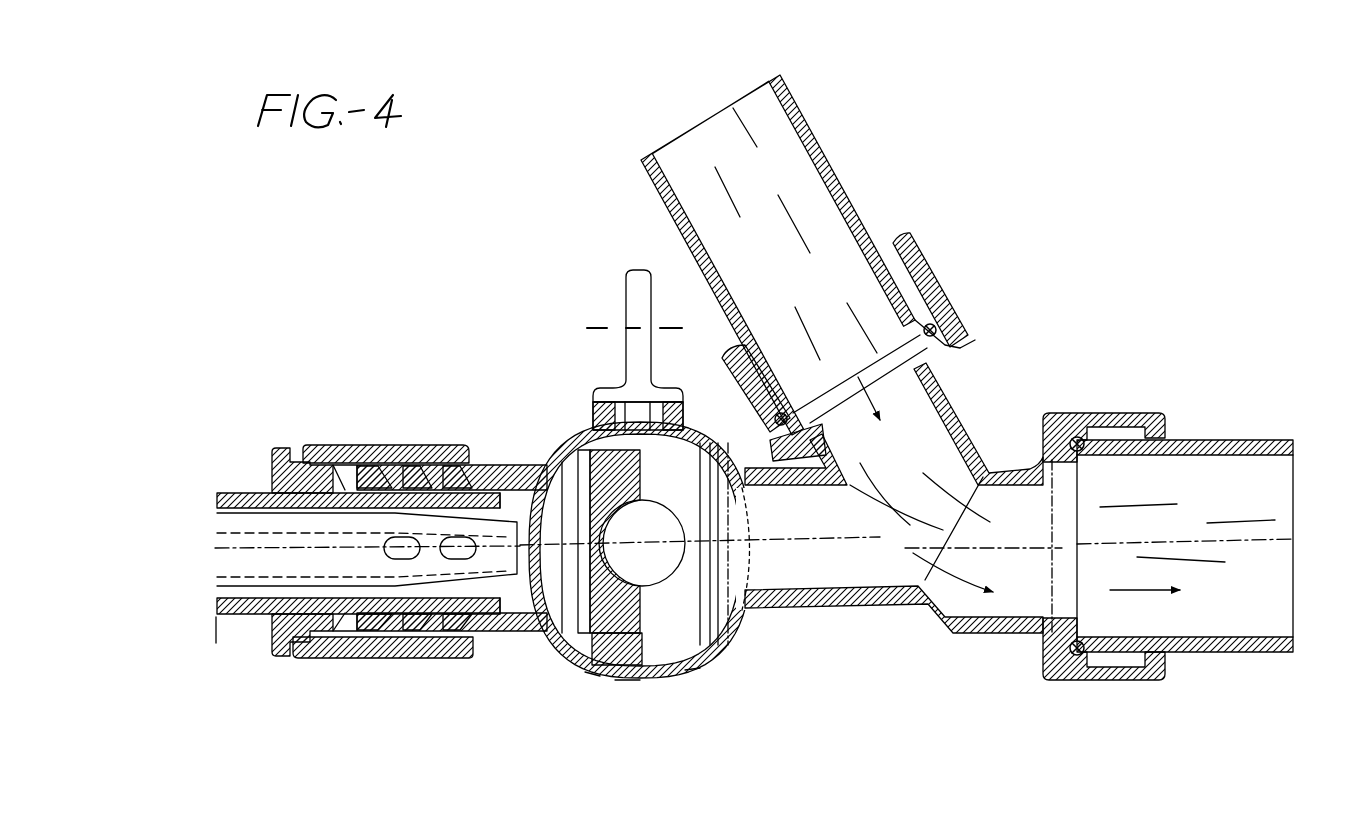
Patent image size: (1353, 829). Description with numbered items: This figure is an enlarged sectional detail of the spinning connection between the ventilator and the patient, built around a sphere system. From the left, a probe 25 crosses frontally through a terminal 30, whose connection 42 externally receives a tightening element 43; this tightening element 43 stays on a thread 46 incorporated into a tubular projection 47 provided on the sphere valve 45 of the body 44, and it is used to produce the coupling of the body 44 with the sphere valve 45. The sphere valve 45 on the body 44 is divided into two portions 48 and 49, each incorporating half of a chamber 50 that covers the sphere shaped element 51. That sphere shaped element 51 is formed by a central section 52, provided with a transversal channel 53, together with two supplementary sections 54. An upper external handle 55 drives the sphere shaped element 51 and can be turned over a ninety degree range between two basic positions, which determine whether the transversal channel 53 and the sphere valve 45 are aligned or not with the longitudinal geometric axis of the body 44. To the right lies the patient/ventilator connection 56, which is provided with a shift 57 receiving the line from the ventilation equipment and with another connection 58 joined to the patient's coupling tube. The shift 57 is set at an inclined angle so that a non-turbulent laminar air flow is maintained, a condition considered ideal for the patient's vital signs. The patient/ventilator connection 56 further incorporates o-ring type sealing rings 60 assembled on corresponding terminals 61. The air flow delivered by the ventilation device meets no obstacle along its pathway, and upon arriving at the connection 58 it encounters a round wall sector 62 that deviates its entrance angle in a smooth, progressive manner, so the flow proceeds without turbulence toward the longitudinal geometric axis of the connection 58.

The probe 25 is at (330, 535).
The terminal 30 is at (275, 410).
The connection 42 is at (358, 615).
The tightening element 43 is at (410, 663).
The body 44 is at (532, 687).
The sphere valve 45 is at (548, 365).
The thread 46 is at (380, 457).
The tubular projection 47 is at (487, 470).
The first portion 48 is at (598, 677).
The second portion 49 is at (692, 673).
The chamber 50 is at (700, 648).
The sphere shaped element 51 is at (628, 690).
The central section 52 is at (676, 482).
The transversal channel 53 is at (660, 572).
The supplementary sections 54 is at (565, 490).
The upper external handle 55 is at (627, 283).
The patient/ventilator connection 56 is at (1082, 300).
The shift 57 is at (957, 418).
The connection 58 is at (1192, 402).
The coupling nut 60 is at (932, 322).
The terminals 61 is at (948, 340).
The round wall sector 62 is at (945, 630).